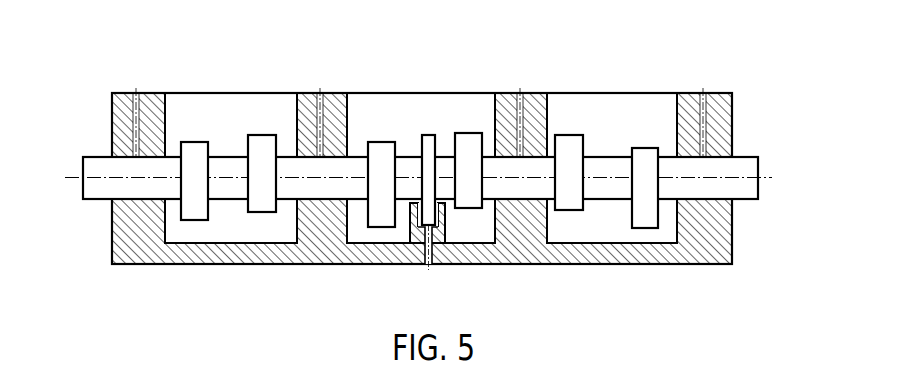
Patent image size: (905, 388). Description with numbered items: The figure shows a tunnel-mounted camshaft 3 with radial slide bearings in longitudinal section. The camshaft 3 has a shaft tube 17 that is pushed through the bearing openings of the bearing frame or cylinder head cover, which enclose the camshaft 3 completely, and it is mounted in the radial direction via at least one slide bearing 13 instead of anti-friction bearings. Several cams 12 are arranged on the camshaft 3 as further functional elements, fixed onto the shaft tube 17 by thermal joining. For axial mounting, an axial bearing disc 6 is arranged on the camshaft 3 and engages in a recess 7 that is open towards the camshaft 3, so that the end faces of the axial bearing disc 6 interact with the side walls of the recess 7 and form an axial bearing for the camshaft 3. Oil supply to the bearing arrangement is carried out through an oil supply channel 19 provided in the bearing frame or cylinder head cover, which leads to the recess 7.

The camshaft 3 is at (428, 136).
The shaft tube 17 is at (743, 168).
The cam 12 is at (645, 163).
The slide bearing 13 is at (531, 152).
The axial bearing disc 6 is at (417, 208).
The recess 7 is at (444, 208).
The oil supply channel 19 is at (428, 262).